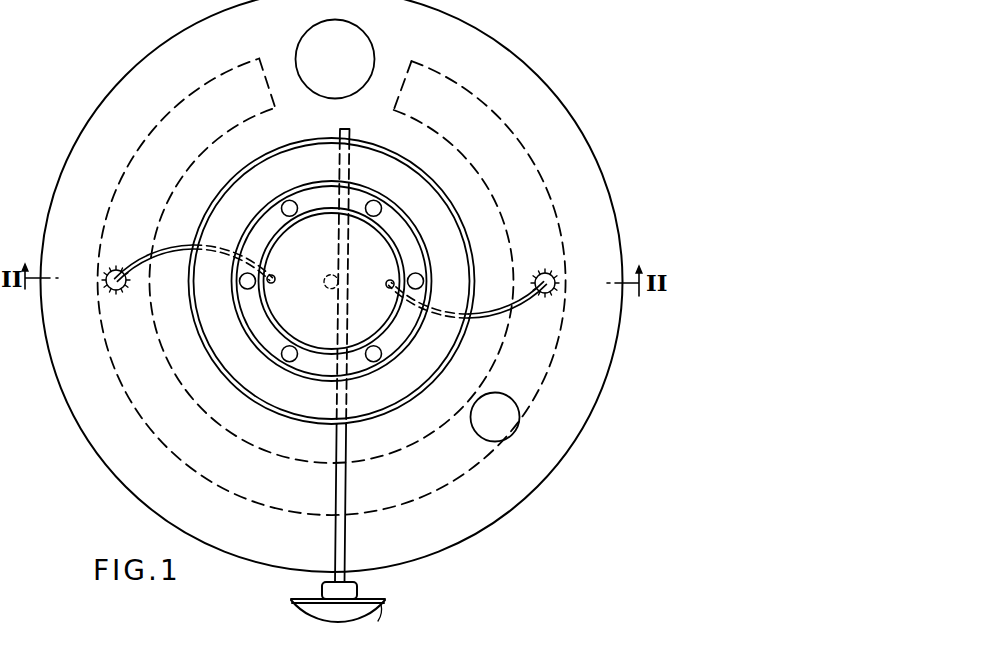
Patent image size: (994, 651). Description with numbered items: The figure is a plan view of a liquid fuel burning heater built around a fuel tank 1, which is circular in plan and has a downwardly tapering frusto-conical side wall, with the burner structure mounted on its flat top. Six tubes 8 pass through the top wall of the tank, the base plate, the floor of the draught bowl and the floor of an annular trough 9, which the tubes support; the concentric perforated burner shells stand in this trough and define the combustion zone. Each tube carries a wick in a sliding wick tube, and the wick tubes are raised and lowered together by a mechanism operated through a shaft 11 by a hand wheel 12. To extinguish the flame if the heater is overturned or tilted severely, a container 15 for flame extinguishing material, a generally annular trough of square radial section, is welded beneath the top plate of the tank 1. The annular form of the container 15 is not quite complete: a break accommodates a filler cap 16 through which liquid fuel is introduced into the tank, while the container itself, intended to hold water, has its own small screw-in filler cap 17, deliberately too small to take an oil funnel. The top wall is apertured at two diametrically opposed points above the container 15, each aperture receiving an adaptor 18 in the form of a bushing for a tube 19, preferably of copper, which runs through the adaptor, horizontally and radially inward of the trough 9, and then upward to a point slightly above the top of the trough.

The fuel tank 1 is at (577, 427).
The tubes 8 is at (420, 280).
The annular trough 9 is at (408, 246).
The shaft 11 is at (345, 545).
The hand wheel 12 is at (387, 604).
The container 15 is at (460, 120).
The filler cap 16 is at (358, 50).
The filler cap 17 is at (505, 425).
The adaptor 18 is at (541, 271).
The tube 19 is at (511, 298).